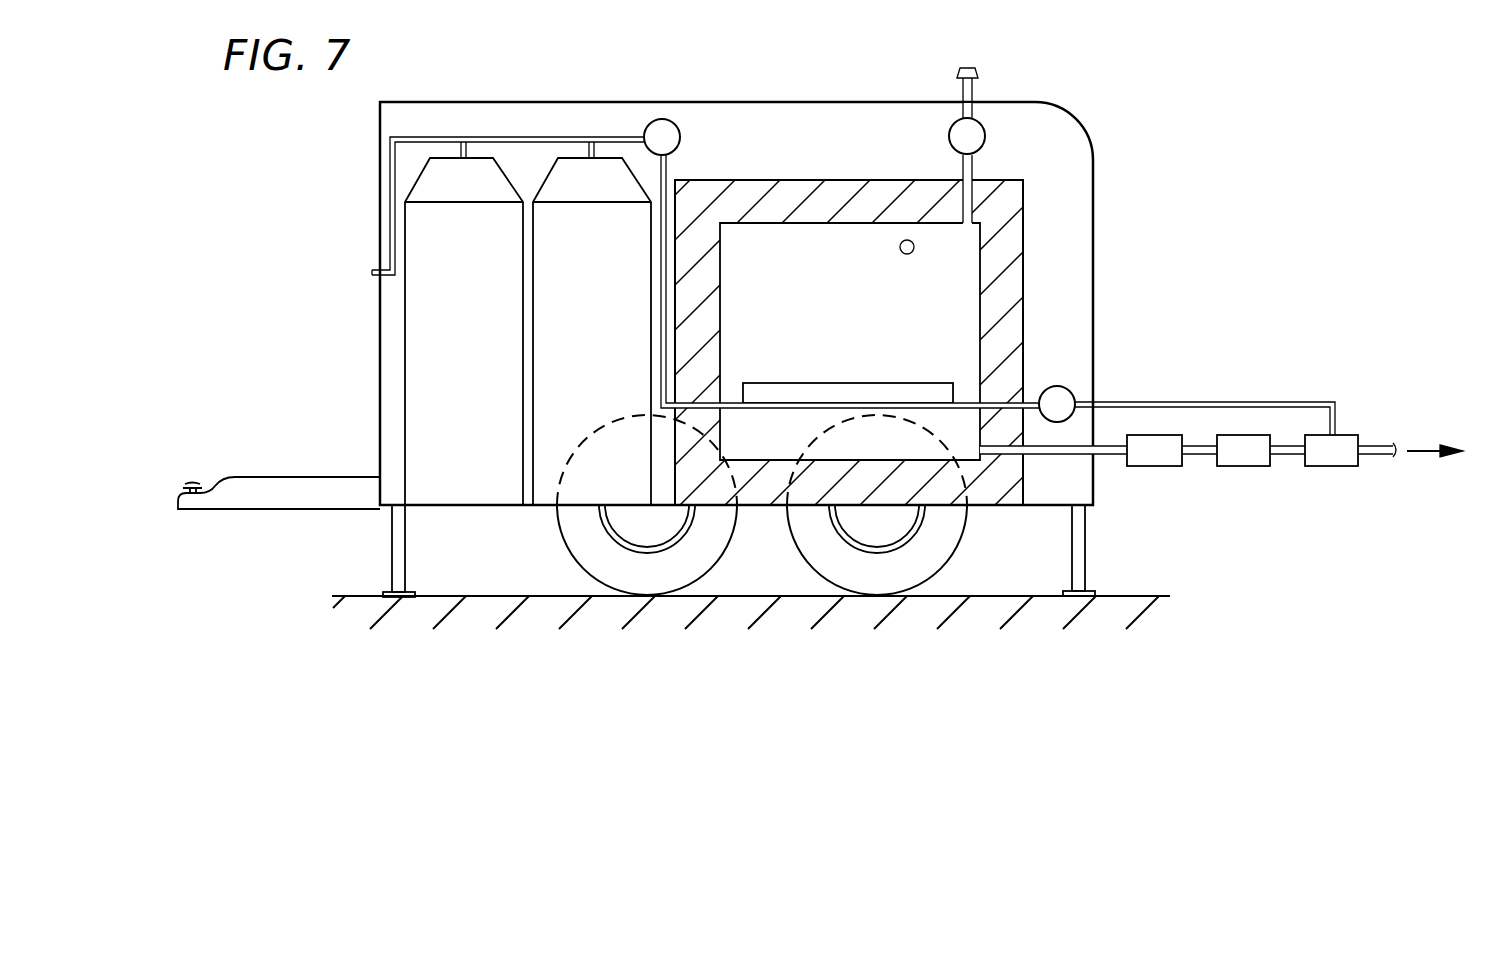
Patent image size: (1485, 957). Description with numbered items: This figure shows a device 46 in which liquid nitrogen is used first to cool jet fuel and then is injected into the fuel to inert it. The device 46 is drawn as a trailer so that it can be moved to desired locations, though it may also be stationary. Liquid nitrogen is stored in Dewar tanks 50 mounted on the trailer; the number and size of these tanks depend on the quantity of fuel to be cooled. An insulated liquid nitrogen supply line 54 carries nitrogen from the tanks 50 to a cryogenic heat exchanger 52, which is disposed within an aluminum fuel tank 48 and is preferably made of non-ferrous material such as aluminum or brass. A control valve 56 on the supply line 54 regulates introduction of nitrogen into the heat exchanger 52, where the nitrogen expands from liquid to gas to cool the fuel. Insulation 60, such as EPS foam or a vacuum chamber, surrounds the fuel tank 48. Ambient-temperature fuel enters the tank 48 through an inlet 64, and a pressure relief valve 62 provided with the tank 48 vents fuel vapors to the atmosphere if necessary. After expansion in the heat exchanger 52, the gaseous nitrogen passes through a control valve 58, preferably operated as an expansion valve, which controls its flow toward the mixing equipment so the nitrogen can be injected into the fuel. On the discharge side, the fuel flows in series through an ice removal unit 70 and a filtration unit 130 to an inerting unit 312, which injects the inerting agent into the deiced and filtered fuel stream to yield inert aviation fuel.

The device 46 is at (830, 97).
The aluminum fuel tank 48 is at (978, 285).
The Dewar tanks 50 is at (417, 342).
The cryogenic heat exchanger 52 is at (808, 390).
The insulated liquid nitrogen supply line 54 is at (667, 167).
The control valve 56 is at (675, 120).
The control valve 58 is at (1058, 384).
The insulation 60 is at (710, 310).
The pressure relief valve 62 is at (985, 132).
The inlet 64 is at (905, 255).
The ice removal unit 70 is at (1142, 461).
The filtration unit 130 is at (1227, 461).
The inerting unit 312 is at (1315, 461).